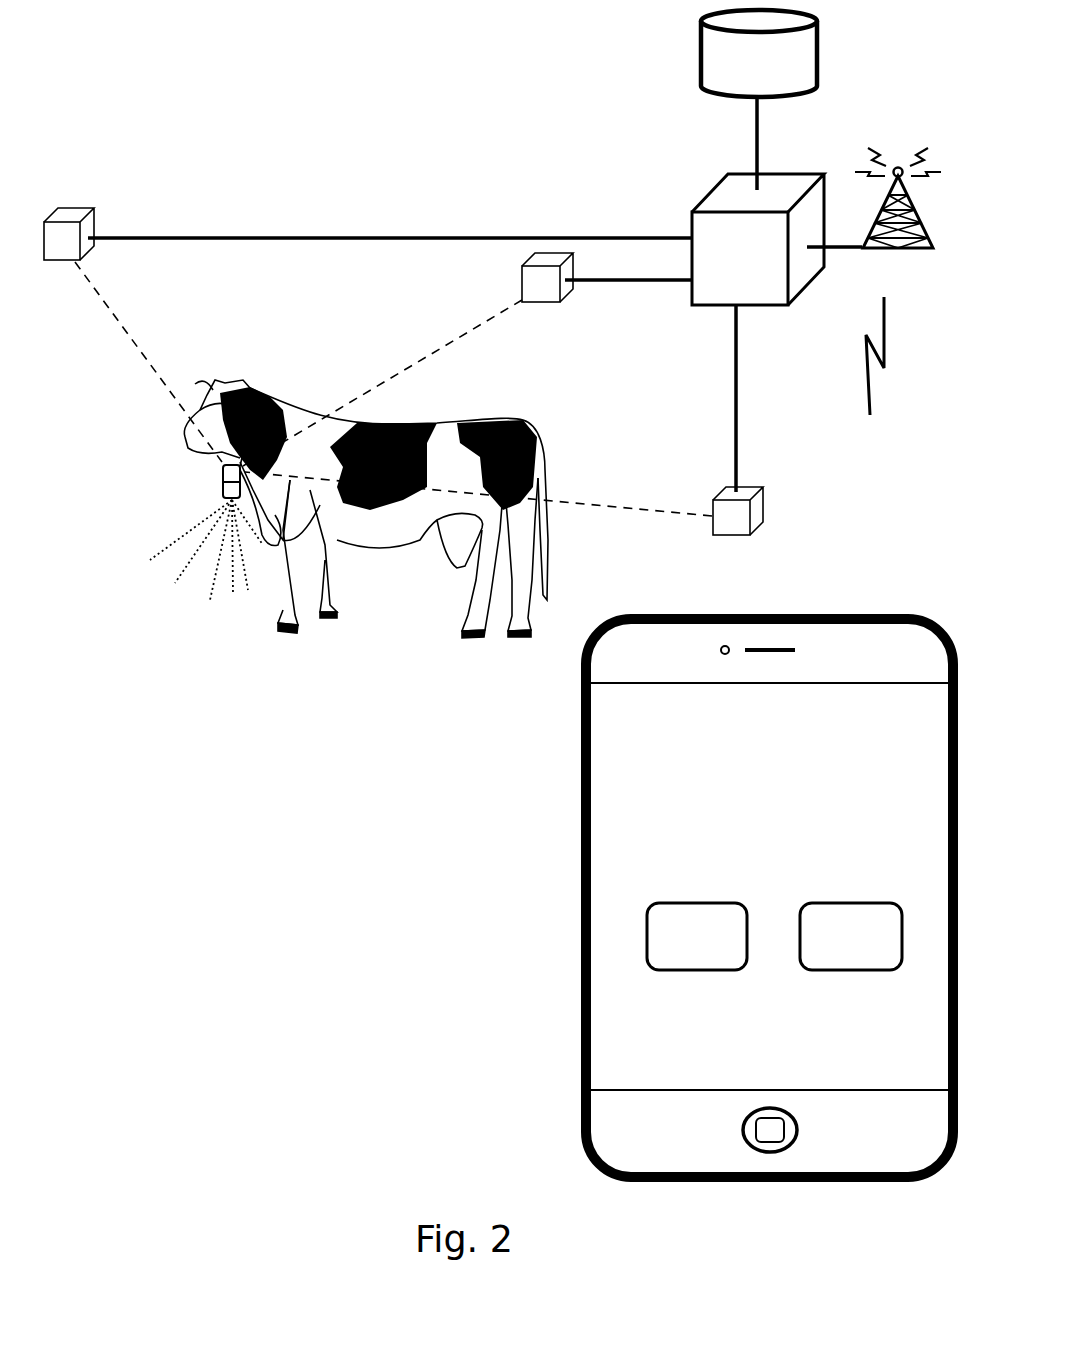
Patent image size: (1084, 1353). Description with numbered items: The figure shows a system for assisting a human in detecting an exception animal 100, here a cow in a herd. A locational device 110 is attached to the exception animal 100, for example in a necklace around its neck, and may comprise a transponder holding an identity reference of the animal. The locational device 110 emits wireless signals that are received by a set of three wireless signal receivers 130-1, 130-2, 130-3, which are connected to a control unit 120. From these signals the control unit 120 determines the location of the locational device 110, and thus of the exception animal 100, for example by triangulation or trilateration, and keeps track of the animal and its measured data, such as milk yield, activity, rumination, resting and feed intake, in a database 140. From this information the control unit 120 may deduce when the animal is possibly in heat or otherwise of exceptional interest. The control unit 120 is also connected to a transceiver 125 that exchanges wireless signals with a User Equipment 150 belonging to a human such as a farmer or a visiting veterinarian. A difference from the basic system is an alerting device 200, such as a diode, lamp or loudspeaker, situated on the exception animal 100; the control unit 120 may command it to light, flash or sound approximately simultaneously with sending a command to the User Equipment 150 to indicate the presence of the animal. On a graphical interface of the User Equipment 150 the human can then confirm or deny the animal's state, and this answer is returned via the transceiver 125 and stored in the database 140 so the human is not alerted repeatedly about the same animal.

The exception animal 100 is at (443, 437).
The locational device 110 is at (222, 470).
The control unit 120 is at (758, 239).
The transceiver 125 is at (897, 167).
The wireless signal receiver 130-1 is at (545, 260).
The wireless signal receiver 130-2 is at (70, 217).
The wireless signal receiver 130-3 is at (750, 482).
The database 140 is at (700, 44).
The User Equipment 150 is at (853, 613).
The alerting device 200 is at (222, 492).